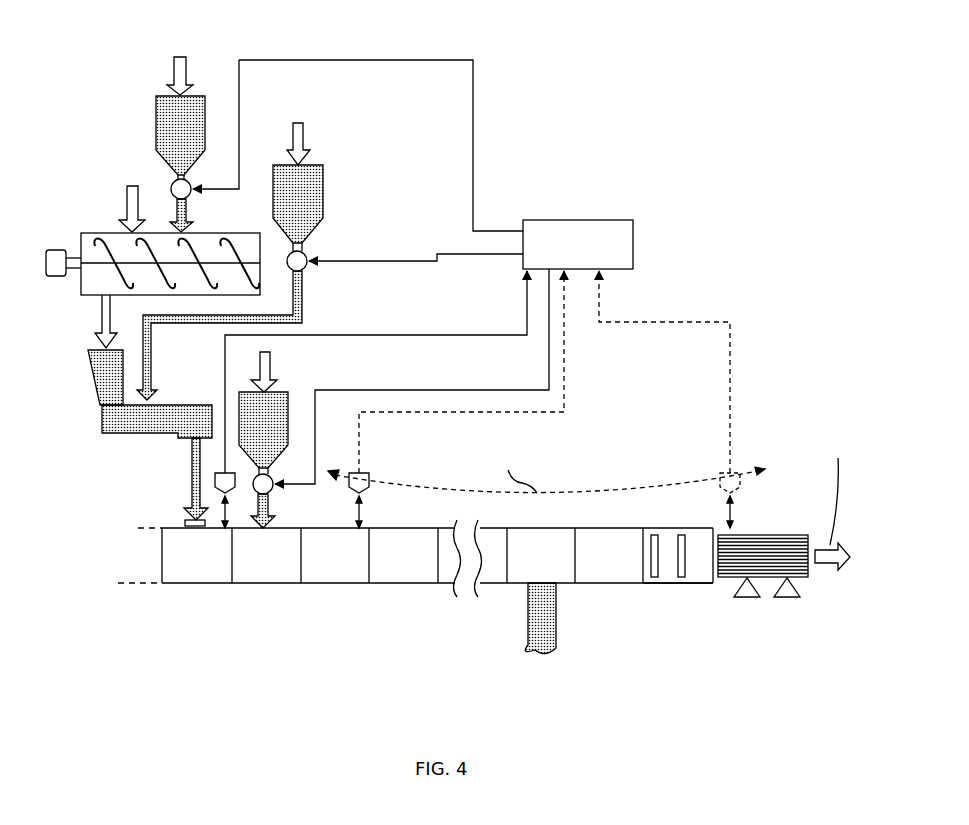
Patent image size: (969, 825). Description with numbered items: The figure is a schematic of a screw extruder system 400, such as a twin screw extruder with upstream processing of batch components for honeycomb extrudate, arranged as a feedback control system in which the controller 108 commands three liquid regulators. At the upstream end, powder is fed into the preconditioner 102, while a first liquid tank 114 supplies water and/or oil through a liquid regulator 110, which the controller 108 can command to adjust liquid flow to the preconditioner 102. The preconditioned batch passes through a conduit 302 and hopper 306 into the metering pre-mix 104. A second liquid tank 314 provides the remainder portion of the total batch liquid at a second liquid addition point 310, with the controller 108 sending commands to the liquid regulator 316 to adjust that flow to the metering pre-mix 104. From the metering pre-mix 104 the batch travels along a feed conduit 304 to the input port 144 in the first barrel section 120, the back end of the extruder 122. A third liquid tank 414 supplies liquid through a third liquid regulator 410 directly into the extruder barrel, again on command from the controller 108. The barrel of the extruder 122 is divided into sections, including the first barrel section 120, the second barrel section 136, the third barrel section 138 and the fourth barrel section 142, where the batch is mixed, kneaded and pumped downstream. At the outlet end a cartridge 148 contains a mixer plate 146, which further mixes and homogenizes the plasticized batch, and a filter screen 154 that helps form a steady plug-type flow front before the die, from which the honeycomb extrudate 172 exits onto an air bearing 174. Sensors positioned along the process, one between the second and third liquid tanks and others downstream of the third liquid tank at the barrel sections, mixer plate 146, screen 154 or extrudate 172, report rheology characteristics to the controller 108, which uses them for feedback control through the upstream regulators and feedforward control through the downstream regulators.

The screw extruder system 400 is at (478, 18).
The liquid tank 114 is at (165, 113).
The liquid regulator 110 is at (186, 185).
The preconditioner 102 is at (111, 240).
The powder feed conduit 302 is at (100, 329).
The feed hopper 306 is at (112, 395).
The second liquid addition point 310 is at (162, 392).
The metering pre-mix 104 is at (122, 423).
The mixture feed conduit 304 is at (192, 480).
The input port 144 is at (185, 522).
The second liquid tank 314 is at (308, 190).
The liquid regulator 316 is at (306, 254).
The controller 108 is at (625, 220).
The third liquid tank 414 is at (263, 433).
The third liquid regulator 410 is at (274, 492).
The first barrel section 120 is at (200, 570).
The second barrel section 136 is at (282, 570).
The third barrel section 138 is at (340, 575).
The fourth barrel section 142 is at (397, 575).
The extruder 122 is at (597, 570).
The mixer plate 146 is at (654, 568).
The cartridge 148 is at (695, 585).
The filter screen 154 is at (682, 548).
The honeycomb extrudate 172 is at (785, 545).
The air bearing 174 is at (749, 590).